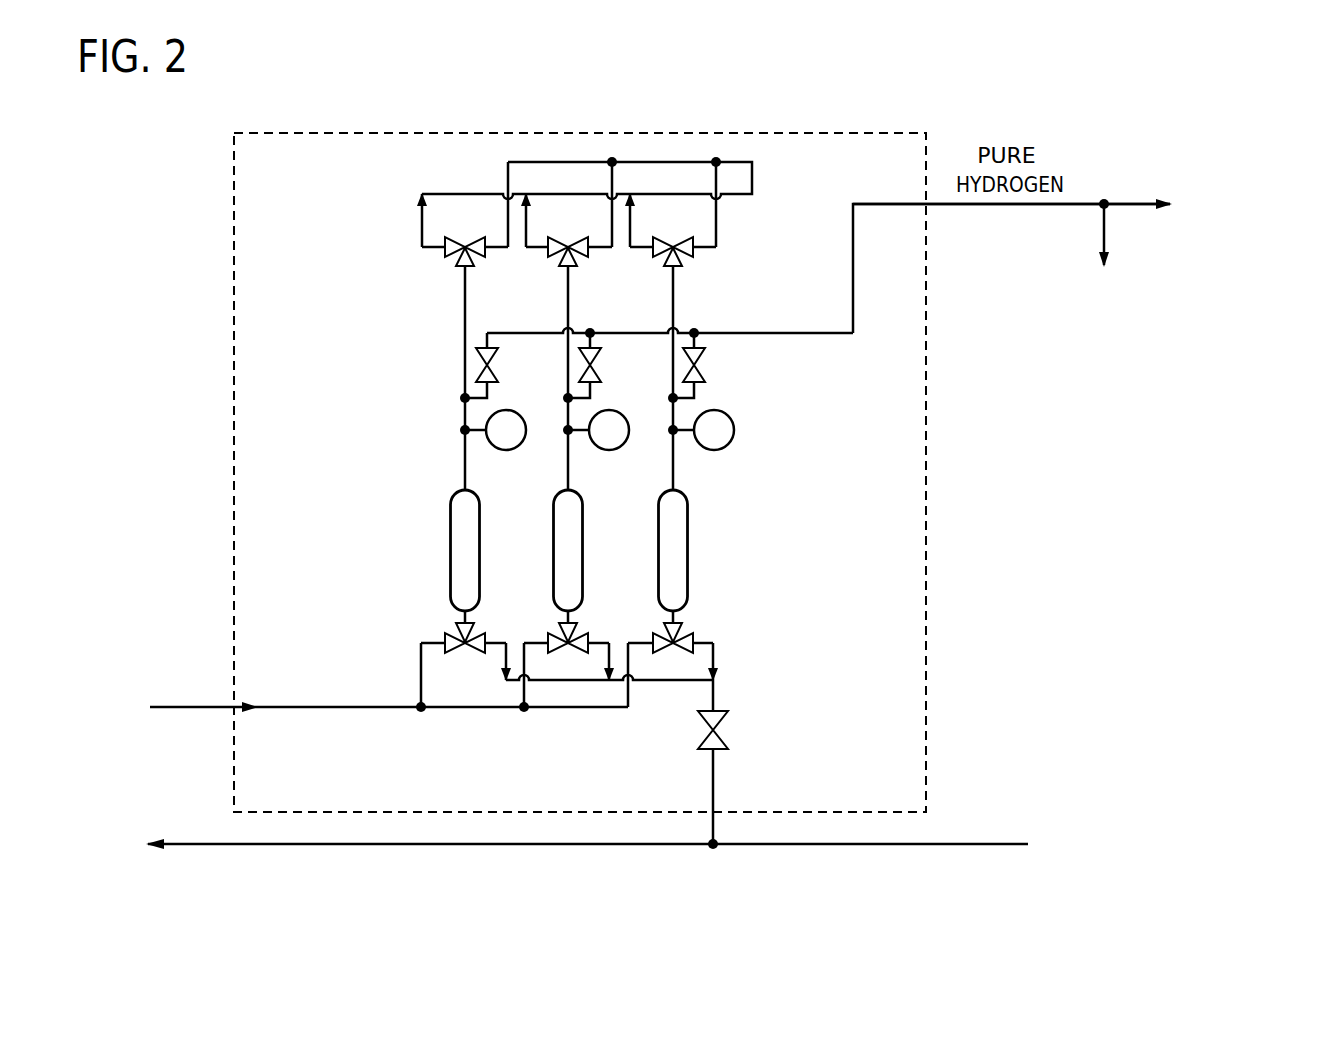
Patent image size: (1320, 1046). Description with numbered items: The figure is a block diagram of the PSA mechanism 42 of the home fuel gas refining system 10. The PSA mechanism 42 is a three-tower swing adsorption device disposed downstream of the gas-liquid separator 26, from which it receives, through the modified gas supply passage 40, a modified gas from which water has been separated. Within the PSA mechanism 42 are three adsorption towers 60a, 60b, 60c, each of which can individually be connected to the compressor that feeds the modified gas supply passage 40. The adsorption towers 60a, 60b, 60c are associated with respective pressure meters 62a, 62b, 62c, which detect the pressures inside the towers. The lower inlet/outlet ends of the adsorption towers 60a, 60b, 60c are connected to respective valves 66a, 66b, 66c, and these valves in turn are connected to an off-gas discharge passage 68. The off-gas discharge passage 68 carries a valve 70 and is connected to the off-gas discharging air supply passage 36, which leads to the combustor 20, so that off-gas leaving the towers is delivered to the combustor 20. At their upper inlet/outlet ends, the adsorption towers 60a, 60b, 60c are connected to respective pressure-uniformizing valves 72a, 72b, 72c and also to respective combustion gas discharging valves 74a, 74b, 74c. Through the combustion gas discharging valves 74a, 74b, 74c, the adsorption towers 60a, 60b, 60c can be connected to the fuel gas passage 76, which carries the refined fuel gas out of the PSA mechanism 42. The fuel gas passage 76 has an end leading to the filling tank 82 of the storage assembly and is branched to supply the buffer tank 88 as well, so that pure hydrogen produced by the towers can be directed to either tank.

The hydrogen purification system 10 is at (146, 150).
The combustor 20 is at (77, 842).
The gas-liquid separator 26 is at (80, 714).
The off-gas discharging air supply passage 36 is at (790, 846).
The modified gas supply passage 40 is at (203, 706).
The PSA mechanism 42 is at (927, 512).
The adsorption tower 60a is at (460, 492).
The adsorption tower 60b is at (563, 492).
The adsorption tower 60c is at (668, 492).
The pressure meter 62a is at (506, 451).
The pressure meter 62b is at (609, 451).
The pressure meter 62c is at (714, 451).
The valve 66a is at (480, 637).
The valve 66b is at (583, 637).
The valve 66c is at (688, 637).
The off-gas discharge passage 68 is at (716, 771).
The valve 70 is at (697, 730).
The pressure-uniformizing valve 72a is at (443, 258).
The pressure-uniformizing valve 72b is at (546, 258).
The pressure-uniformizing valve 72c is at (651, 258).
The combustion gas discharging valve 74a is at (500, 364).
The combustion gas discharging valve 74b is at (603, 364).
The combustion gas discharging valve 74c is at (707, 364).
The fuel gas passage 76 is at (1056, 208).
The filling tank 82 is at (1247, 205).
The buffer tank 88 is at (1104, 300).